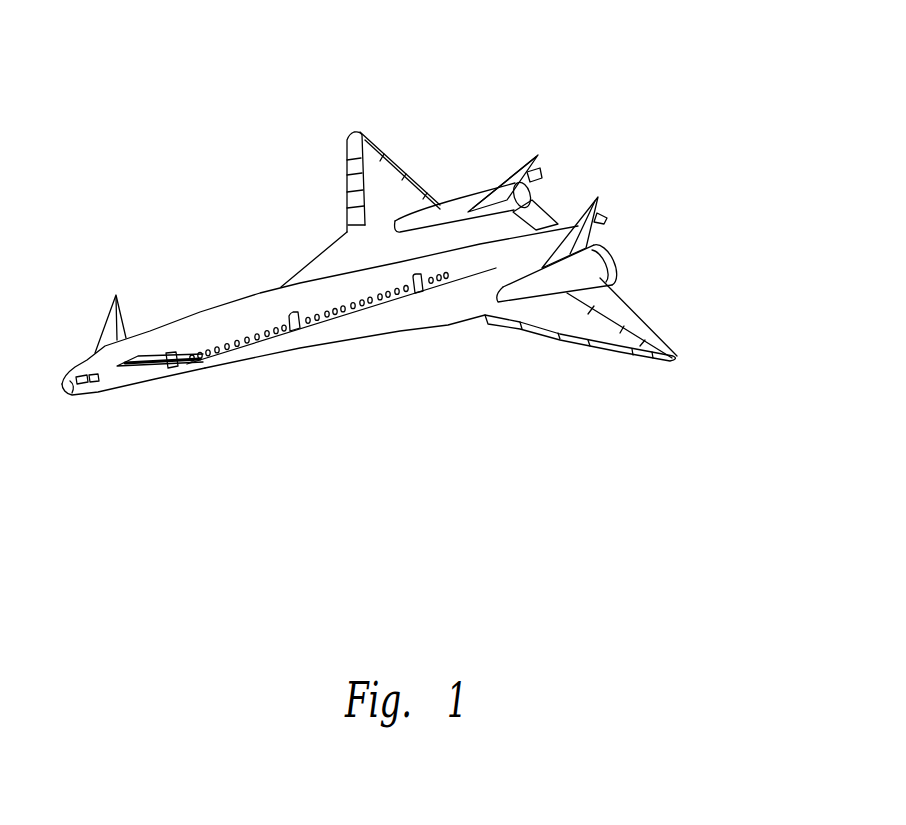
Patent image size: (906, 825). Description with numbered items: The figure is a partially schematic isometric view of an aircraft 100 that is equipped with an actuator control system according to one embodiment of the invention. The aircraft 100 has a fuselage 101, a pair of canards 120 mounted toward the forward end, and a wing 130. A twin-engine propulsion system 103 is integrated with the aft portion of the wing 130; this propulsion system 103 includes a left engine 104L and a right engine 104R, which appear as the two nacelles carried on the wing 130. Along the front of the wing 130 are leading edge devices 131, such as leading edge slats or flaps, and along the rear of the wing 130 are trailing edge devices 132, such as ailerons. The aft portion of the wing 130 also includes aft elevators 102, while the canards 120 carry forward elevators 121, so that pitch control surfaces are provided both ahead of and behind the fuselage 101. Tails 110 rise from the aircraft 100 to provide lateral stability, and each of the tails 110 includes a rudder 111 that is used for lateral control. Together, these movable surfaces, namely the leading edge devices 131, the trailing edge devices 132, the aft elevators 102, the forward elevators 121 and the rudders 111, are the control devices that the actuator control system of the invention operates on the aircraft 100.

The aircraft 100 is at (324, 360).
The fuselage 101 is at (223, 303).
The aft elevators 102 is at (561, 218).
The twin-engine propulsion system 103 is at (631, 273).
The right engine 104R is at (458, 196).
The left engine 104L is at (598, 298).
The tails 110 is at (521, 172).
The rudder 111 is at (545, 170).
The canards 120 is at (107, 318).
The forward elevators 121 is at (132, 305).
The wing 130 is at (405, 317).
The leading edge devices 131 is at (609, 366).
The trailing edge devices 132 is at (662, 334).